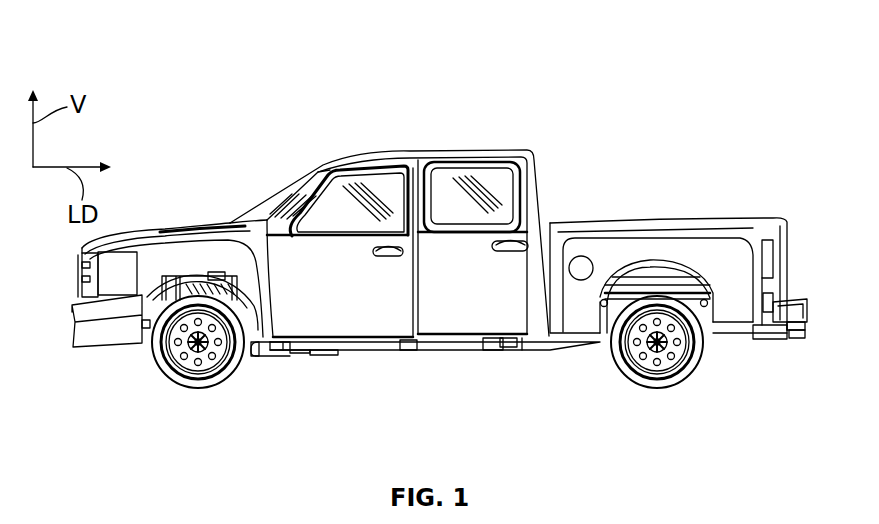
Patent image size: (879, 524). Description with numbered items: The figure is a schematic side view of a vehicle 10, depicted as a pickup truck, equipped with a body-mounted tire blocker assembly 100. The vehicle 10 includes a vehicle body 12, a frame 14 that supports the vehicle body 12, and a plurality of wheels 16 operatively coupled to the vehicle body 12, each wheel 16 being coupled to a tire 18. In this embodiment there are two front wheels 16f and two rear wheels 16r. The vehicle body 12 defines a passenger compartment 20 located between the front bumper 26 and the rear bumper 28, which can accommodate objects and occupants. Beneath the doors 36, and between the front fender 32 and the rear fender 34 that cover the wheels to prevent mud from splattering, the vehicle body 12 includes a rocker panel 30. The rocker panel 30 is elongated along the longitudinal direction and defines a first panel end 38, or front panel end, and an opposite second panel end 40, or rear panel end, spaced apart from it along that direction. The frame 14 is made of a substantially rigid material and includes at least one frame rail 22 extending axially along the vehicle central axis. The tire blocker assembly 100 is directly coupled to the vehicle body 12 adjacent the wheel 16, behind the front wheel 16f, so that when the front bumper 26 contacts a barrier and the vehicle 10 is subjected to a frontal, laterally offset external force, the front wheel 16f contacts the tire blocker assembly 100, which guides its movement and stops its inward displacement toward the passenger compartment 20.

The vehicle 10 is at (102, 40).
The vehicle body 12 is at (457, 150).
The frame 14 is at (380, 352).
The wheels 16 is at (178, 337).
The front wheels 16f is at (195, 362).
The rear wheels 16r is at (648, 363).
The tire 18 is at (208, 385).
The passenger compartment 20 is at (368, 185).
The frame rail 22 is at (350, 352).
The front bumper 26 is at (72, 306).
The rear bumper 28 is at (810, 310).
The rocker panel 30 is at (433, 347).
The front fender 32 is at (183, 258).
The rear fender 34 is at (692, 248).
The doors 36 is at (361, 291).
The first panel end 38 is at (280, 328).
The second panel end 40 is at (530, 337).
The tire blocker assembly 100 is at (257, 356).